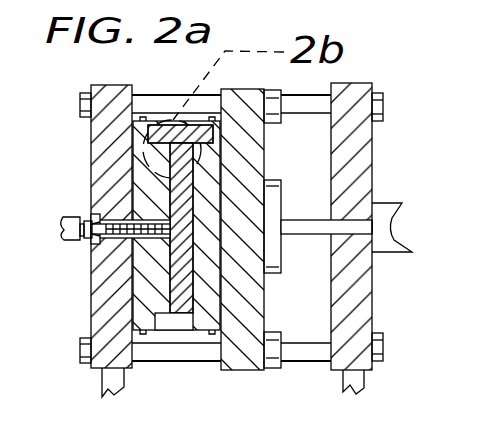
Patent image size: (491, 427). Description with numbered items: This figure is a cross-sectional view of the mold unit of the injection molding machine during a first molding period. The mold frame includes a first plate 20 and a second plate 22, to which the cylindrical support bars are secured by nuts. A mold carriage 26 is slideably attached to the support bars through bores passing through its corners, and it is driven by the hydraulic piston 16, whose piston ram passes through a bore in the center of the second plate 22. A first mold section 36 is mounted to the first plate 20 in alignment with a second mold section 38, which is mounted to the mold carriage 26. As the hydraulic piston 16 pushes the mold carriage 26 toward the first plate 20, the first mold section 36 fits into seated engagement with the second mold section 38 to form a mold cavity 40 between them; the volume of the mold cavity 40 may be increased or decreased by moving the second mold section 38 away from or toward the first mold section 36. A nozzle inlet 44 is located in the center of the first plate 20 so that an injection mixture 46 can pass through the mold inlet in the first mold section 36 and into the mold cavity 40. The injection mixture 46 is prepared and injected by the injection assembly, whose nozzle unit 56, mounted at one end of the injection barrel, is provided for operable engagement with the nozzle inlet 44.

The hydraulic piston 16 is at (397, 189).
The first plate 20 is at (104, 85).
The second plate 22 is at (351, 83).
The mold carriage 26 is at (251, 370).
The first mold section 36 is at (308, 220).
The second mold section 38 is at (196, 343).
The mold cavity 40 is at (193, 272).
The nozzle inlet 44 is at (91, 222).
The injection mixture 46 is at (180, 305).
The nozzle unit 56 is at (70, 242).